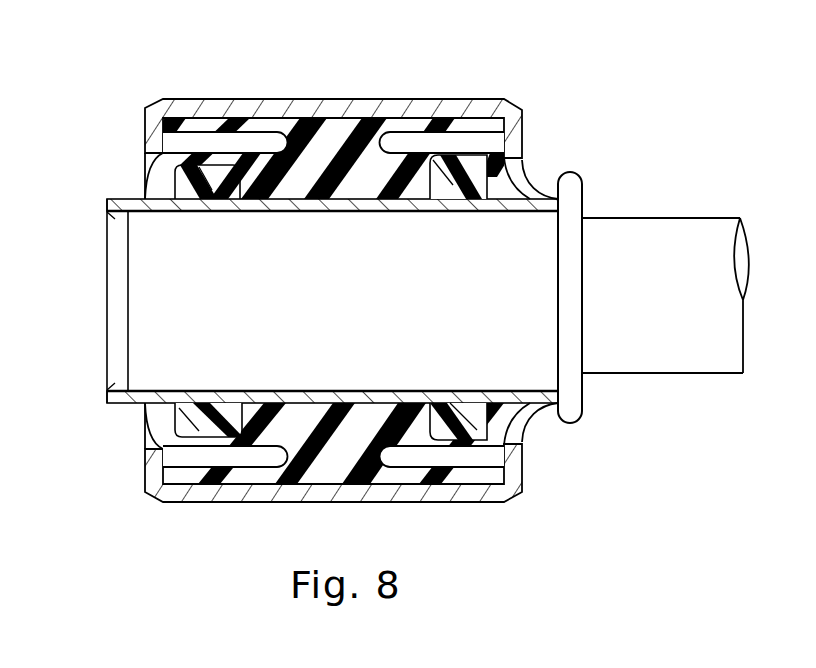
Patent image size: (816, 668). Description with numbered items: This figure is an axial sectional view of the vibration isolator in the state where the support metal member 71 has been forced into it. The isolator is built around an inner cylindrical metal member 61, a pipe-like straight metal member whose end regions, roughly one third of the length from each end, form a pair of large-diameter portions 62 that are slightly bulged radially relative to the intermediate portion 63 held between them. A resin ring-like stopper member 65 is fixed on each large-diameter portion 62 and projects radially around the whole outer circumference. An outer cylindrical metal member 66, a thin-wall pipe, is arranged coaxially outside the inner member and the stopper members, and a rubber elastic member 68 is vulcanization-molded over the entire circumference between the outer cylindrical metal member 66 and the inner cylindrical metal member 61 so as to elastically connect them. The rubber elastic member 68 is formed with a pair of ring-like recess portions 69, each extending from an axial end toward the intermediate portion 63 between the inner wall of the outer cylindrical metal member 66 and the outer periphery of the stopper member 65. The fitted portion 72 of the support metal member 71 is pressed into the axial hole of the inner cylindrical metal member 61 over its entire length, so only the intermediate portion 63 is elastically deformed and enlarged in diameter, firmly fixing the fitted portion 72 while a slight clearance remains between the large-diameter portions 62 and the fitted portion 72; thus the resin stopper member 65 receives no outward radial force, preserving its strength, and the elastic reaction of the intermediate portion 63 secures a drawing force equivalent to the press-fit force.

The inner cylindrical metal member 61 is at (370, 255).
The large-diameter portion 62 is at (137, 199).
The intermediate portion 63 is at (356, 192).
The stopper member 65 is at (178, 160).
The outer cylindrical metal member 66 is at (413, 108).
The rubber elastic member 68 is at (527, 163).
The recess portion 69 is at (487, 135).
The support metal member 71 is at (629, 198).
The fitted portion 72 is at (150, 318).